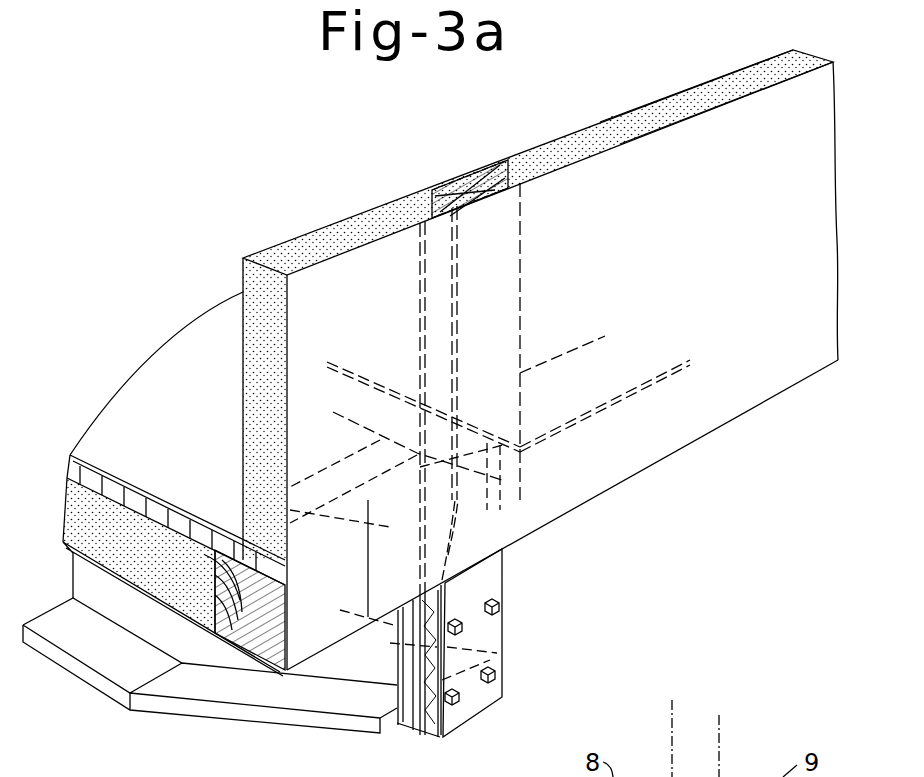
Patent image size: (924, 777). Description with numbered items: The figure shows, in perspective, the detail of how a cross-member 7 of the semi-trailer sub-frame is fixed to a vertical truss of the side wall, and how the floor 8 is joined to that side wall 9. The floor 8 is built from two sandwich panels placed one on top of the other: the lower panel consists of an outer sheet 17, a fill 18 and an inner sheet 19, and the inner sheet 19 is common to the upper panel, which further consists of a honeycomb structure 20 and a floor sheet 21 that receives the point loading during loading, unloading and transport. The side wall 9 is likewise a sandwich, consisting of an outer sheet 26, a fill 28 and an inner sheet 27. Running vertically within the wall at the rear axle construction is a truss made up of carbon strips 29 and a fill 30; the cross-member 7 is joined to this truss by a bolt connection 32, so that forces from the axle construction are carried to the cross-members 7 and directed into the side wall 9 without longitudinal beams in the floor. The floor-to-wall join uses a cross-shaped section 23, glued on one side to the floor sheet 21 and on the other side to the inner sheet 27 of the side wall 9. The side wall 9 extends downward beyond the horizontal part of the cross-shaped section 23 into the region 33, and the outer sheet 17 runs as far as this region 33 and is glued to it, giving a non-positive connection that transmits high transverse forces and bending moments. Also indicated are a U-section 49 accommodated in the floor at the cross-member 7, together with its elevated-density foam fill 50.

The cross-member 7 is at (118, 660).
The floor 8 is at (148, 338).
The wall sandwich panel 9 is at (362, 200).
The outer sheet 17 is at (85, 570).
The fill 18 is at (82, 527).
The inner sheet 19 is at (84, 502).
The honeycomb structure 20 is at (68, 470).
The floor sheet 21 is at (108, 440).
The cross-shaped section 23 is at (232, 535).
The outer sheet 26 is at (712, 110).
The inner sheet 27 is at (612, 116).
The fill 28 is at (680, 95).
The carbon strips 29 is at (450, 190).
The fill 30 is at (478, 178).
The bolt connection 32 is at (492, 608).
The region 33 is at (283, 672).
The U-section 49 is at (342, 360).
The fill 50 is at (517, 463).